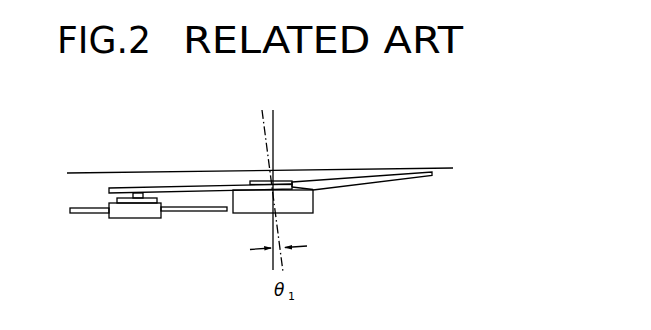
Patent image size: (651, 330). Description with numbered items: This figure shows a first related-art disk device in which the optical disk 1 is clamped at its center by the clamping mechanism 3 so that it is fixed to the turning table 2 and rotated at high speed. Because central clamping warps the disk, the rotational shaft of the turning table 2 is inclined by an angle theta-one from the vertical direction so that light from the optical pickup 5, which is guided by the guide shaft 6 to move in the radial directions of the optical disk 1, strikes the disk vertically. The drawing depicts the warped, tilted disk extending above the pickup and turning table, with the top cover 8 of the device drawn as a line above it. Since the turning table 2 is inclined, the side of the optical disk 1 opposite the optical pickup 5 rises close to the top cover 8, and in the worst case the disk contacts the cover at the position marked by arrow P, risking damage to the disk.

The optical disk 1 is at (390, 182).
The turning table 2 is at (308, 203).
The clamping mechanism 3 is at (284, 181).
The optical pickup 5 is at (133, 226).
The guide shaft 6 is at (84, 216).
The top cover 8 is at (154, 171).
The contact position P is at (432, 183).